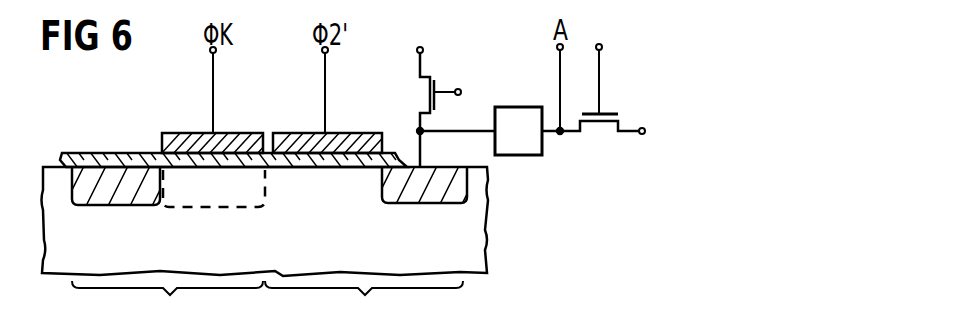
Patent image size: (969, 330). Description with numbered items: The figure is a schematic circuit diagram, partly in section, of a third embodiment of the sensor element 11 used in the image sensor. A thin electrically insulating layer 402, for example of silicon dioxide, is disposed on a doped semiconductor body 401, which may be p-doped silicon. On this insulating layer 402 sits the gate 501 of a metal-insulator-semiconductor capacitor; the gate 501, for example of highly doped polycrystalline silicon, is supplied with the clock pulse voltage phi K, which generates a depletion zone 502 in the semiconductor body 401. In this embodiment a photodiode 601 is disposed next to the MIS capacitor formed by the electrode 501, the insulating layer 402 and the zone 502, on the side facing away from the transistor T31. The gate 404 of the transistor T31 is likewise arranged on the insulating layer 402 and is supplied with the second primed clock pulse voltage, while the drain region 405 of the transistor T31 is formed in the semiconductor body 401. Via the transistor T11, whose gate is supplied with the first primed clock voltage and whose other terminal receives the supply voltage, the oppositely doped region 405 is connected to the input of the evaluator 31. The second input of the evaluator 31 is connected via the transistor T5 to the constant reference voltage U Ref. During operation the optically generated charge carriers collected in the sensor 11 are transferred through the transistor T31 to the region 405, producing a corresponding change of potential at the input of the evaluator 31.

The doped semiconductor body 401 is at (483, 230).
The thin electrically insulating layer 402 is at (122, 155).
The gate 501 is at (181, 126).
The gate of the transistor T31 404 is at (297, 137).
The photodiode 601 is at (105, 197).
The depletion zone 502 is at (220, 207).
The drain region 405 is at (425, 197).
The sensor element 11 is at (167, 305).
The transistor T31 is at (364, 305).
The transistor T11 is at (442, 93).
The transistor T5 is at (624, 88).
The evaluator 31 is at (518, 131).